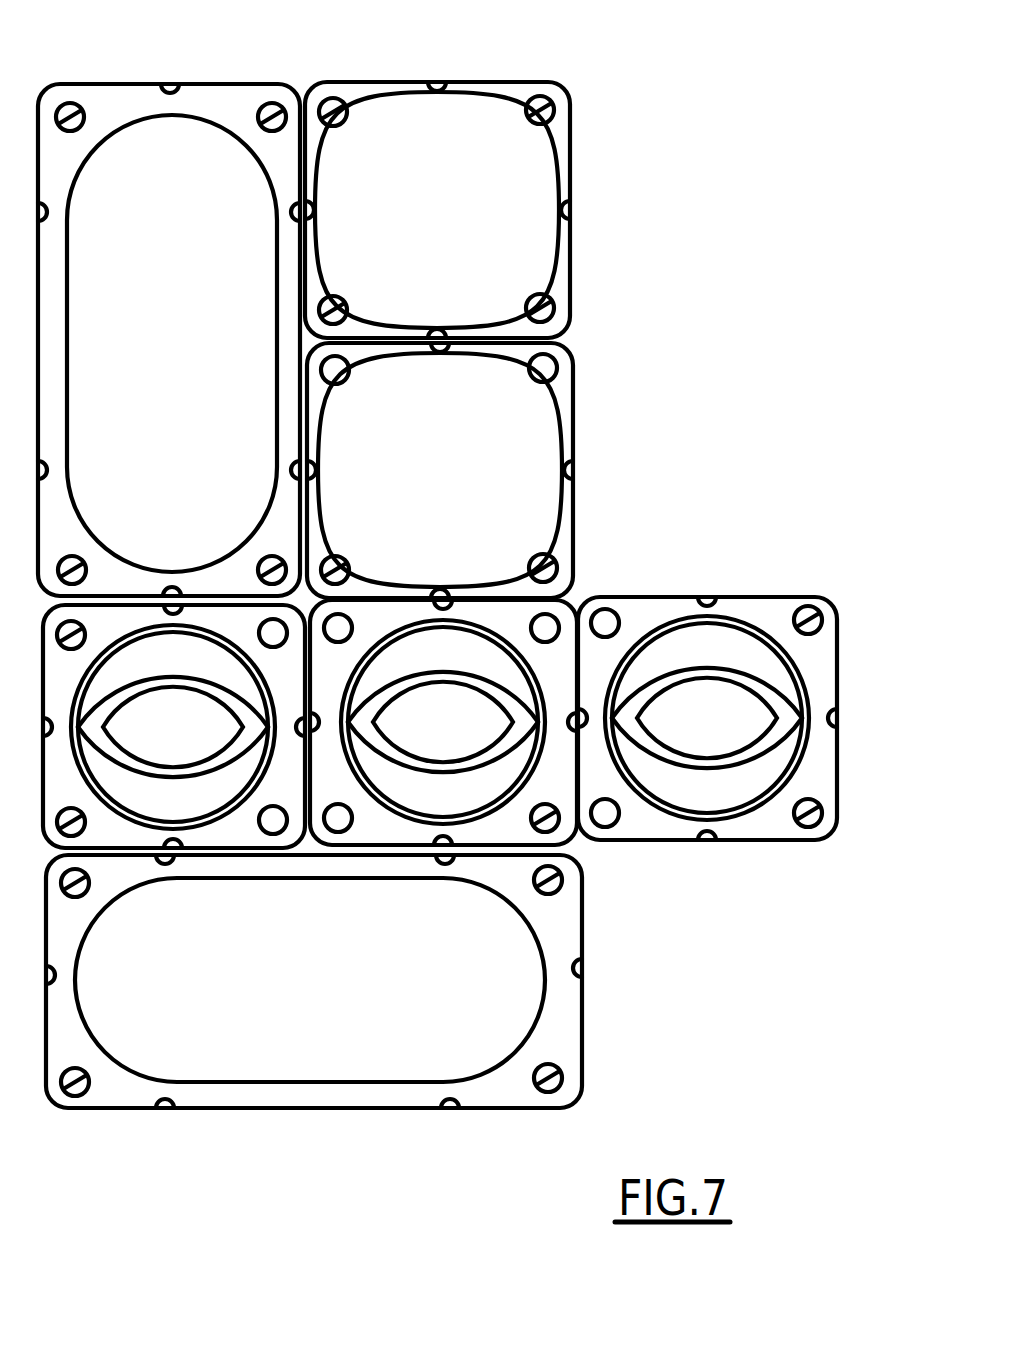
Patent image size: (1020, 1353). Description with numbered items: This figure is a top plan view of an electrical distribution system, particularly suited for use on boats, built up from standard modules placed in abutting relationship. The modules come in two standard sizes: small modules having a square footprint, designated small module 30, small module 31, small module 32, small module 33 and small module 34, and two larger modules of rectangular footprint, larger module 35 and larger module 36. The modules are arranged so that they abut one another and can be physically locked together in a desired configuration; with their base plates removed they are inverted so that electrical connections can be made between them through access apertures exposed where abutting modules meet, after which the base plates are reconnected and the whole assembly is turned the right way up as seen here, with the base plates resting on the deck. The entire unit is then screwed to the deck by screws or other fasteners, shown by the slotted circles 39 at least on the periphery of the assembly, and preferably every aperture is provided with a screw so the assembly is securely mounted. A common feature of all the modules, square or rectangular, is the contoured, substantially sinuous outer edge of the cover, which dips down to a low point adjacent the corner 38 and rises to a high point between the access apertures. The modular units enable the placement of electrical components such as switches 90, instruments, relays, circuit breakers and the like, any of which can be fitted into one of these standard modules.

The small module 30 is at (707, 651).
The small module 31 is at (443, 722).
The small module 32 is at (174, 726).
The small module 33 is at (440, 470).
The small module 34 is at (437, 210).
The larger module 35 is at (314, 981).
The larger module 36 is at (169, 340).
The corner 38 is at (606, 620).
The slotted circles 39 is at (548, 96).
The switches 90 is at (730, 676).